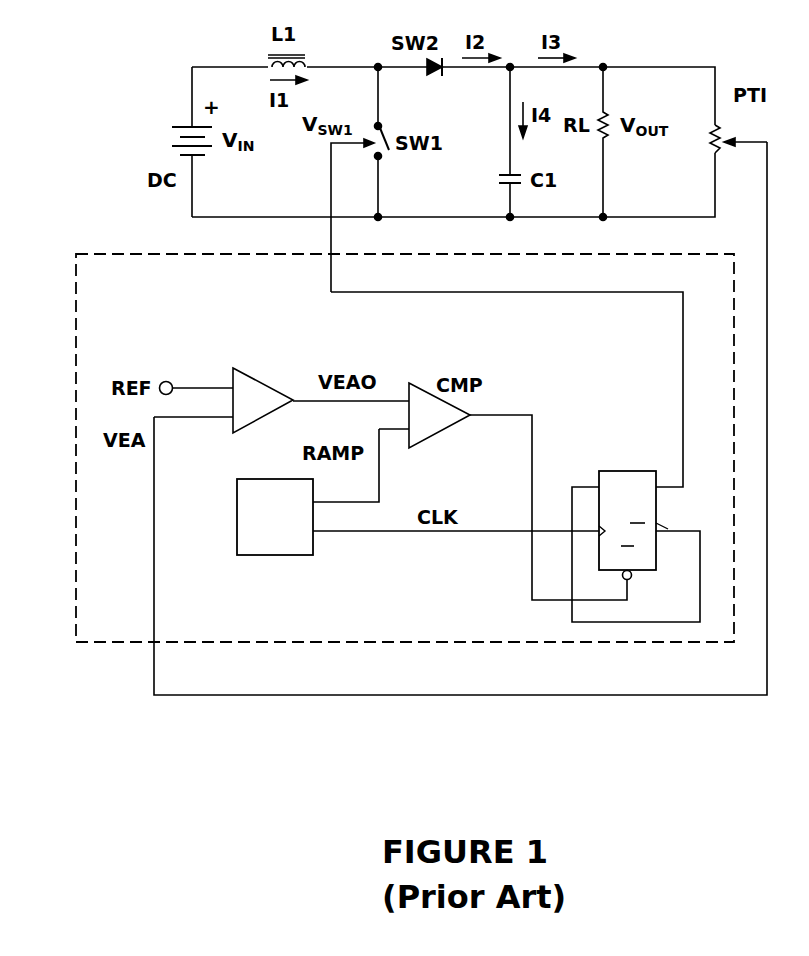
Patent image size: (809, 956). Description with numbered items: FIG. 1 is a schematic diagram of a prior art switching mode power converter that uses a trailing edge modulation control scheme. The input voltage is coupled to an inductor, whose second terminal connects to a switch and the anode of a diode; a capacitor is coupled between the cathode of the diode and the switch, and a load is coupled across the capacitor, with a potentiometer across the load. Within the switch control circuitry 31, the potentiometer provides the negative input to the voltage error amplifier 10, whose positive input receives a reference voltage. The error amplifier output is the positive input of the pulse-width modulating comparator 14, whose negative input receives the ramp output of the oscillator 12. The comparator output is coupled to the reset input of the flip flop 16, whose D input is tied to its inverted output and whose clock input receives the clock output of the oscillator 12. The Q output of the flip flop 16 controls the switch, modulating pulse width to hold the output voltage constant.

The voltage error amplifier 10 is at (265, 373).
The oscillator 12 is at (231, 514).
The pulse-width modulating comparator 14 is at (436, 438).
The flip flop 16 is at (625, 465).
The switch control circuitry 31 is at (112, 248).